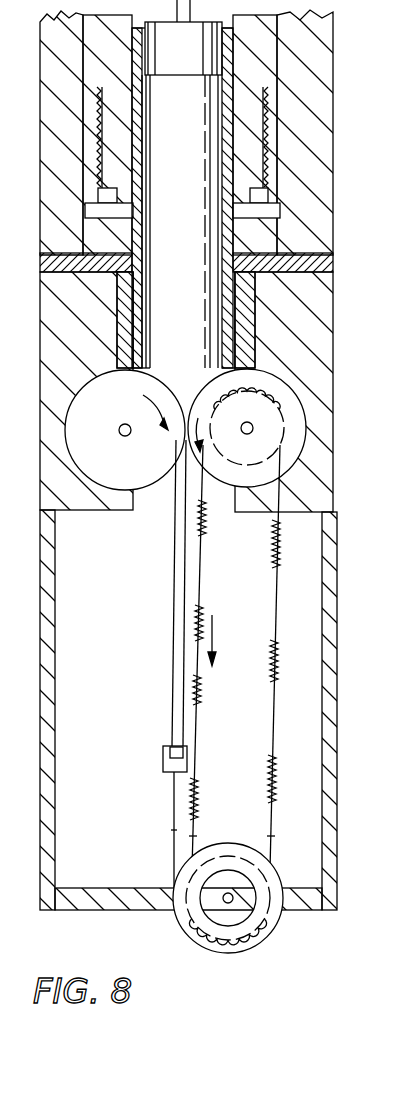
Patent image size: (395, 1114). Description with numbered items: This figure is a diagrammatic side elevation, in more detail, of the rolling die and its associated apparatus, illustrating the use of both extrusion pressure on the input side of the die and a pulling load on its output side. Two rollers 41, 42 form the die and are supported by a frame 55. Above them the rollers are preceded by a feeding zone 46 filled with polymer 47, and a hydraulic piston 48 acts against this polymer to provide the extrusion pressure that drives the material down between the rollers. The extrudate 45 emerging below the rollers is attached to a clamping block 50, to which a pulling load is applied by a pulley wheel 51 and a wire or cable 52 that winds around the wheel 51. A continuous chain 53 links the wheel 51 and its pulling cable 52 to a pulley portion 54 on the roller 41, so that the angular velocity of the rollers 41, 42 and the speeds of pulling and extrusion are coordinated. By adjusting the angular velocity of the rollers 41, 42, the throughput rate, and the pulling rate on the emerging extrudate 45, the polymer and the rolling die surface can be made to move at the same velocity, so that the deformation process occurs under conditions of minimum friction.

The roller 41 is at (297, 443).
The roller 42 is at (120, 412).
The extrudate 45 is at (177, 580).
The feeding zone 46 is at (150, 94).
The polymer 47 is at (200, 189).
The hydraulic piston 48 is at (197, 60).
The clamping block 50 is at (164, 756).
The pulley wheel 51 is at (232, 948).
The wire or cable 52 is at (173, 830).
The continuous chain 53 is at (278, 582).
The pulley portion 54 is at (277, 388).
The frame 55 is at (293, 324).